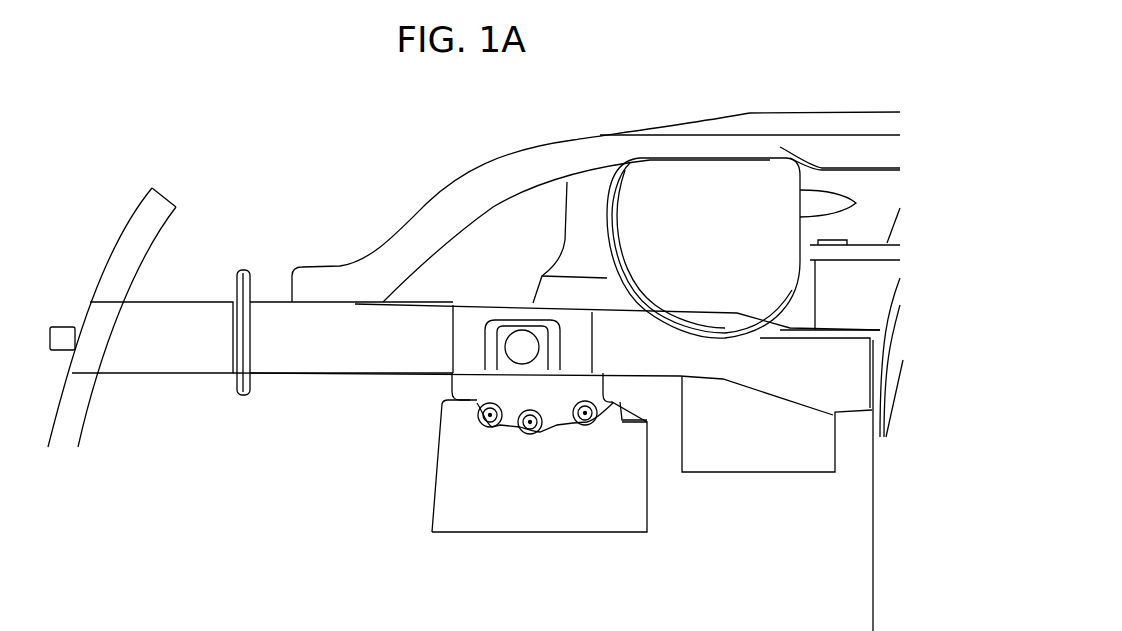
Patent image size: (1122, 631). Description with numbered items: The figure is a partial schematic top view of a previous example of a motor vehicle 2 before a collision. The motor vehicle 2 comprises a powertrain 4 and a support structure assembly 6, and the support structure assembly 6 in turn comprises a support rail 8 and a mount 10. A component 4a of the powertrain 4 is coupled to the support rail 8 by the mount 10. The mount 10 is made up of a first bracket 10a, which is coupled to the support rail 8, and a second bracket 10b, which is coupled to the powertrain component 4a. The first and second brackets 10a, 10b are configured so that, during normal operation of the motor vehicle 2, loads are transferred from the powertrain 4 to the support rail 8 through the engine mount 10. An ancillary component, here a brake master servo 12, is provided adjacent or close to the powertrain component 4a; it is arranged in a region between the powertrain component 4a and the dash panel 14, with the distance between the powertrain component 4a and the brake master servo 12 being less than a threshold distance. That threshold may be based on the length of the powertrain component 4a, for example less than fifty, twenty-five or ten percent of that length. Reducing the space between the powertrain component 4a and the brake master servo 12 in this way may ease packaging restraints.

The motor vehicle 2 is at (178, 148).
The powertrain 4 is at (464, 488).
The powertrain component 4a is at (565, 505).
The support structure assembly 6 is at (660, 289).
The support rail 8 is at (270, 320).
The mount 10 is at (617, 292).
The first bracket 10a is at (460, 352).
The second bracket 10b is at (470, 396).
The brake master servo 12 is at (742, 455).
The dash panel 14 is at (873, 597).